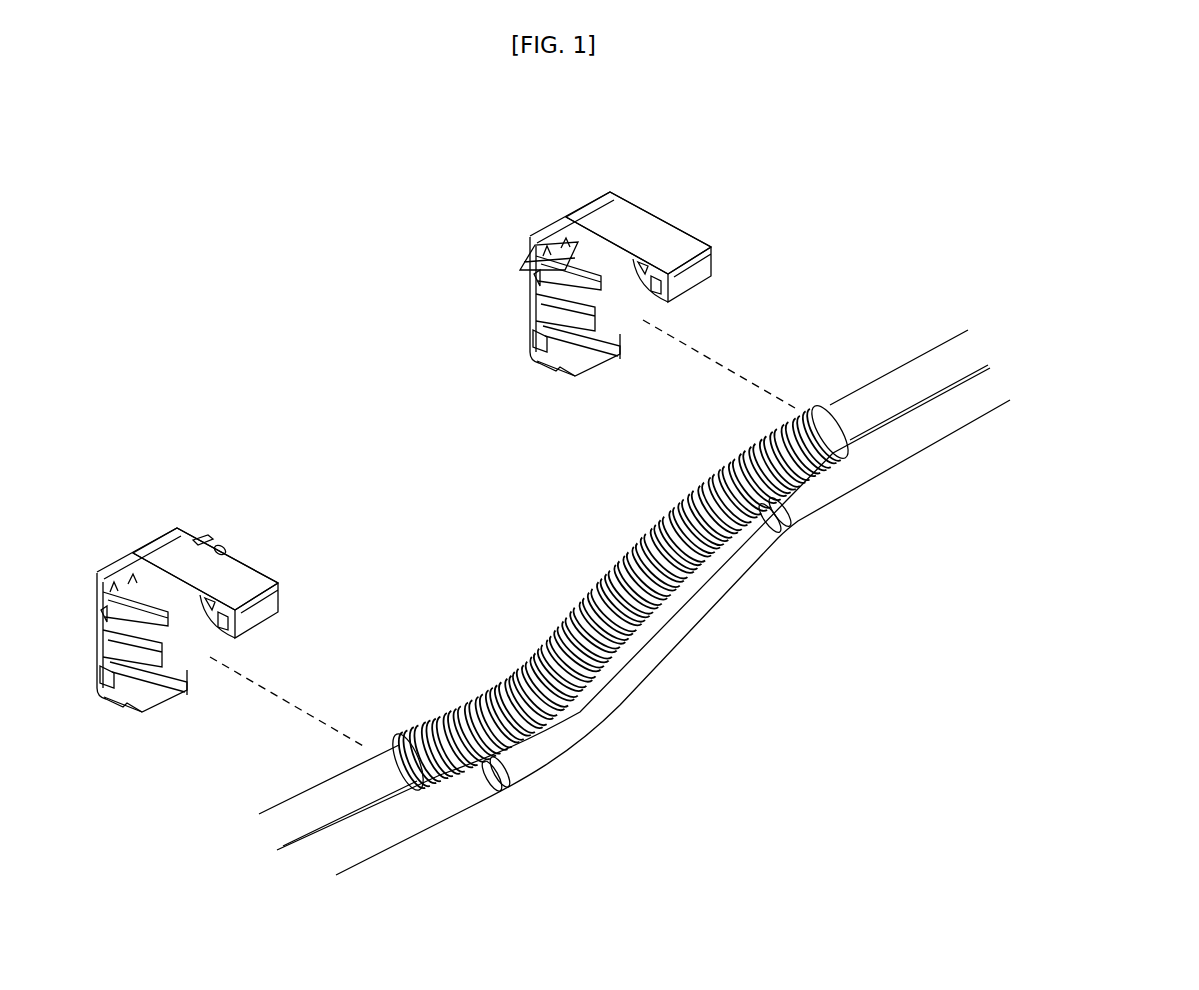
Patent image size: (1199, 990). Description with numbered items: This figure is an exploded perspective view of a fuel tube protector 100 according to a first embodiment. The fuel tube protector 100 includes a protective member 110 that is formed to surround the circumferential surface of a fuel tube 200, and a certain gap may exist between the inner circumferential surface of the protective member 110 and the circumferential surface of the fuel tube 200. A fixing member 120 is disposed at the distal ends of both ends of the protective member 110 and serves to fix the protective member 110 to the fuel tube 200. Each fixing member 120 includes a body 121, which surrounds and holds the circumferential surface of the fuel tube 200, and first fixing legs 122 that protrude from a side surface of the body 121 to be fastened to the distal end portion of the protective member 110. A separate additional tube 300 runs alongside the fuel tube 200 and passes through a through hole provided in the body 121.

The fuel tube protector 100 is at (338, 392).
The protective member 110 is at (547, 630).
The fixing member 120 is at (543, 211).
The body 121 is at (623, 211).
The first fixing legs 122 is at (528, 263).
The fuel tube 200 is at (890, 370).
The additional tube 300 is at (838, 503).